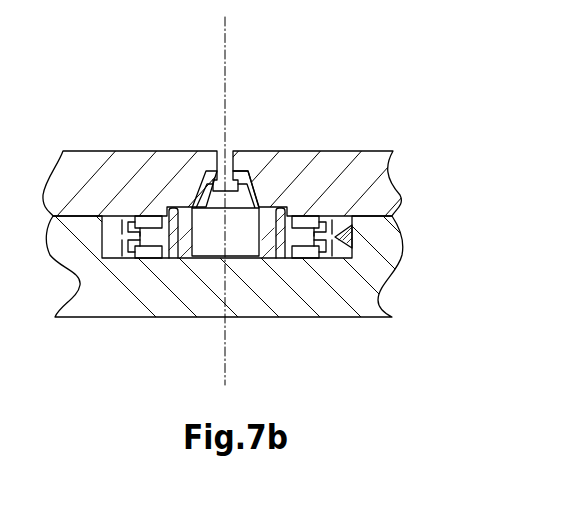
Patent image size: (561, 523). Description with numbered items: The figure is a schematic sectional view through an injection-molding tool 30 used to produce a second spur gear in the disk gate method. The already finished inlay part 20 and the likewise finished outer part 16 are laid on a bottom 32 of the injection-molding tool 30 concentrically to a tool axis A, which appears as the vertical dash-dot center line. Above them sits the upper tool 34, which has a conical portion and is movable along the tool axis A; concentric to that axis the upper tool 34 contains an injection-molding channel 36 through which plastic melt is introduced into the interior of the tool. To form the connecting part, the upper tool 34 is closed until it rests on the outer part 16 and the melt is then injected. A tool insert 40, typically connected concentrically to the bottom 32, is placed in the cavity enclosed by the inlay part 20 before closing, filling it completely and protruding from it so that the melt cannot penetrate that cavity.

The outer part 16 is at (333, 235).
The inlay part 20 is at (180, 258).
The injection-molding tool 30 is at (280, 216).
The bottom 32 is at (333, 307).
The upper tool 34 is at (95, 150).
The injection-molding channel 36 is at (220, 162).
The tool insert 40 is at (217, 237).
The tool axis A is at (225, 32).